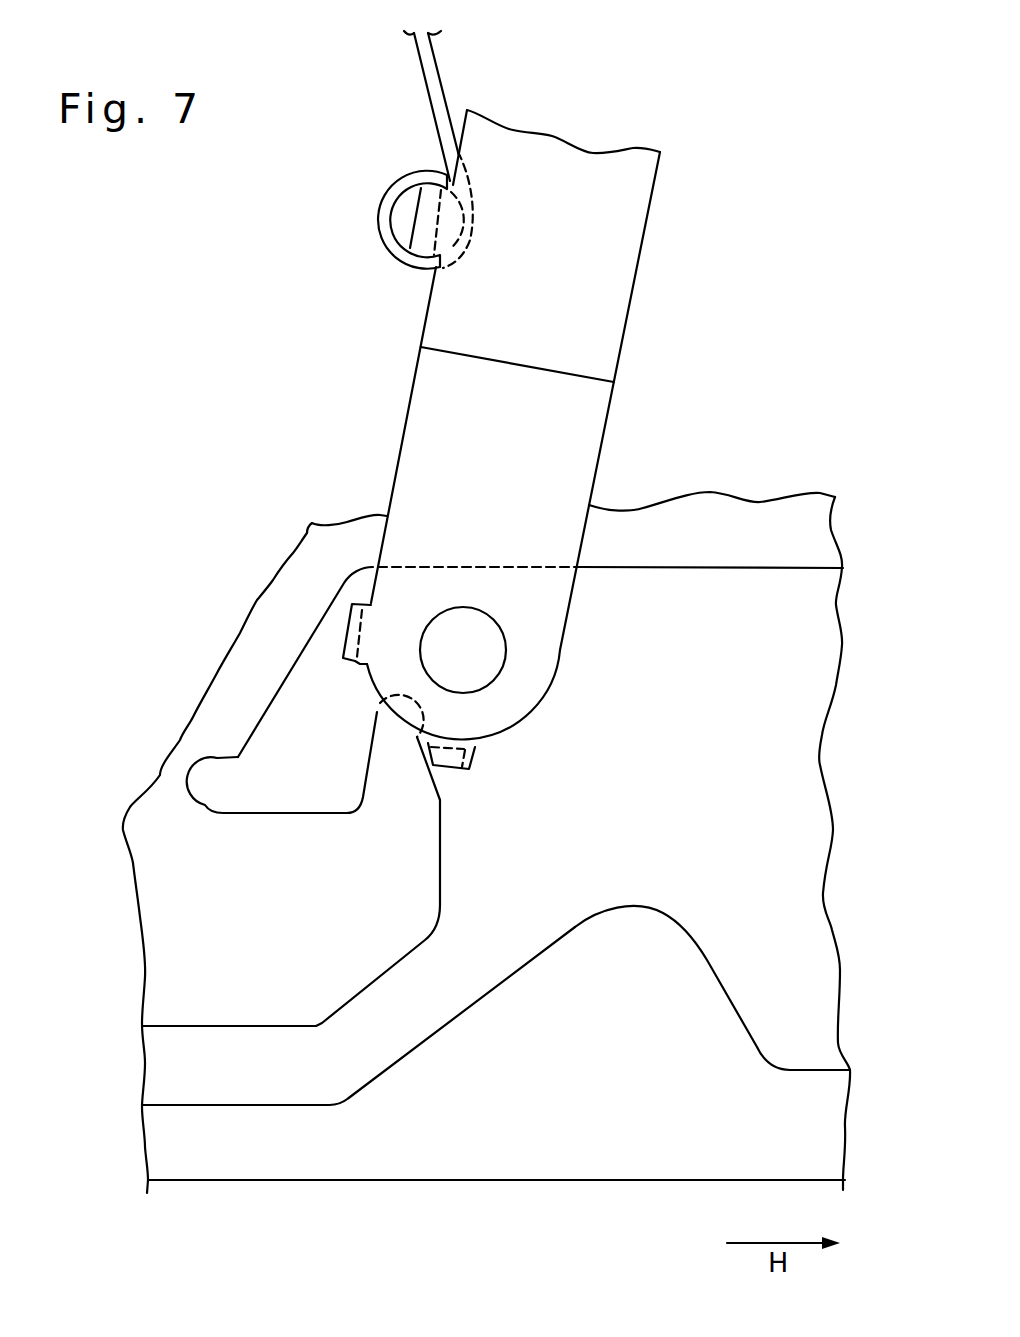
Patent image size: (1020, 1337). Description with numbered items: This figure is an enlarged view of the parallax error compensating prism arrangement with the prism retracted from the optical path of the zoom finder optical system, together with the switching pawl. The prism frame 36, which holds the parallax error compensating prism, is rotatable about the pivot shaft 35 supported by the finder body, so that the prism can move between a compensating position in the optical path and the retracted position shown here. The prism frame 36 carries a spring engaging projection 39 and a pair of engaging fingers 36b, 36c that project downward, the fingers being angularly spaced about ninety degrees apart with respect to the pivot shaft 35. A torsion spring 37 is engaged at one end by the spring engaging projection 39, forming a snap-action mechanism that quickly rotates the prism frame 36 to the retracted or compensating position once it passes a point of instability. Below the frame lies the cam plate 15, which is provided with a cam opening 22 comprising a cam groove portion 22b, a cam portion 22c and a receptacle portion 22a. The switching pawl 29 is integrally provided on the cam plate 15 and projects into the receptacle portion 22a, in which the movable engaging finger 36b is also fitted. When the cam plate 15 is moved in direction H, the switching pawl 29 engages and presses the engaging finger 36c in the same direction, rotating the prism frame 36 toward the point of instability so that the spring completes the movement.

The cam plate 15 is at (608, 1155).
The cam opening 22 is at (787, 823).
The receptacle portion 22a is at (290, 703).
The cam groove portion 22b is at (278, 1073).
The cam portion 22c is at (625, 925).
The switching pawl 29 is at (400, 758).
The pivot shaft 35 is at (488, 660).
The prism frame 36 is at (623, 268).
The engaging finger 36b is at (352, 625).
The engaging finger 36c is at (480, 765).
The torsion spring 37 is at (418, 73).
The spring engaging projection 39 is at (417, 226).